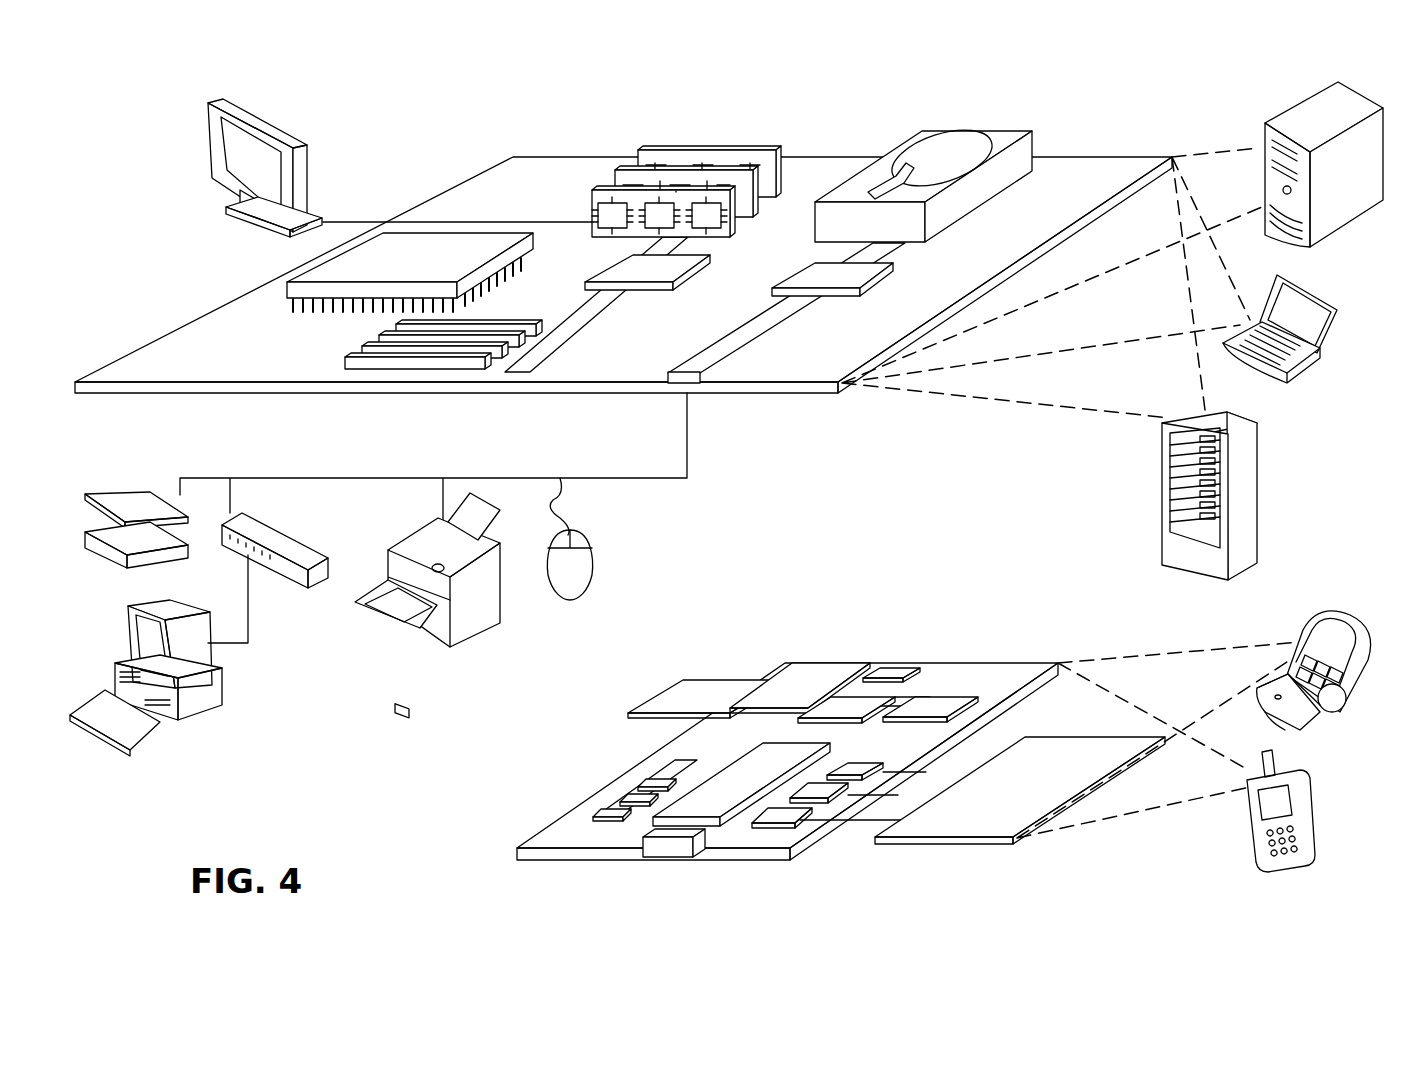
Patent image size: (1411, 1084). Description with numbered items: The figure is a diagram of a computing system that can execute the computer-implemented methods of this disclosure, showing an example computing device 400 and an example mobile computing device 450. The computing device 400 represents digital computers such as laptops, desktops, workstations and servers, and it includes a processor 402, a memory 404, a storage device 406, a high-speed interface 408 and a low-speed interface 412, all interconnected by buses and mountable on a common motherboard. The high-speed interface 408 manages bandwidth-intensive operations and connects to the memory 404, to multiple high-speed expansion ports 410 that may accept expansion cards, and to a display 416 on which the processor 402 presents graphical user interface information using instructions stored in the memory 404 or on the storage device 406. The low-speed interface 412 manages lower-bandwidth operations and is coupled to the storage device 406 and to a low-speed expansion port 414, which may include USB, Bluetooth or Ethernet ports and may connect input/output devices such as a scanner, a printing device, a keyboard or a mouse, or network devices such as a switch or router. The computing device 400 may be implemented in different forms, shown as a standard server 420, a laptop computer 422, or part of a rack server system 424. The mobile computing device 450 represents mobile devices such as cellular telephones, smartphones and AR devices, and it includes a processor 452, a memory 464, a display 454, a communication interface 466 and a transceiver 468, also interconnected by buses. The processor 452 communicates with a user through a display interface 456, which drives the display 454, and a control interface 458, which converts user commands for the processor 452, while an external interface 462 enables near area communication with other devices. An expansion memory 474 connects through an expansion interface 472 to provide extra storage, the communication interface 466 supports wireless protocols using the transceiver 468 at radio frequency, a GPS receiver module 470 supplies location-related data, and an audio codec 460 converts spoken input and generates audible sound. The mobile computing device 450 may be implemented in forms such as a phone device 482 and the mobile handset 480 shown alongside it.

The computing device 400 is at (428, 122).
The processor 402 is at (293, 287).
The memory 404 is at (652, 150).
The storage device 406 is at (910, 134).
The high-speed interface 408 is at (625, 272).
The high-speed expansion ports 410 is at (373, 351).
The low-speed interface 412 is at (813, 274).
The low-speed expansion port 414 is at (698, 385).
The display 416 is at (210, 100).
The standard server 420 is at (1265, 140).
The laptop computer 422 is at (1335, 303).
The rack server system 424 is at (1162, 520).
The mobile computing device 450 is at (488, 858).
The processor 452 is at (713, 807).
The display 454 is at (975, 826).
The display interface 456 is at (787, 817).
The control interface 458 is at (825, 790).
The audio codec 460 is at (853, 768).
The external interface 462 is at (672, 843).
The memory 464 is at (617, 798).
The communication interface 466 is at (845, 706).
The transceiver 468 is at (928, 705).
The GPS receiver module 470 is at (892, 672).
The expansion interface 472 is at (770, 675).
The expansion memory 474 is at (683, 682).
The mobile phone 480 is at (1310, 632).
The phone device 482 is at (1248, 818).